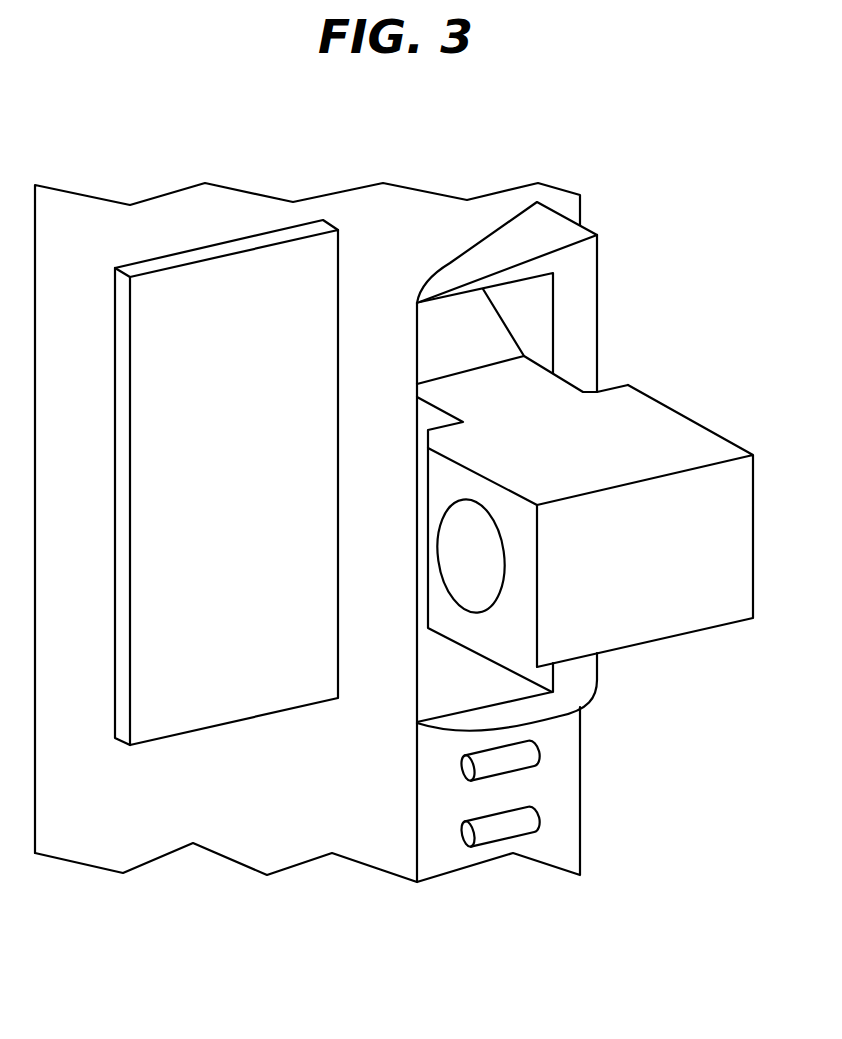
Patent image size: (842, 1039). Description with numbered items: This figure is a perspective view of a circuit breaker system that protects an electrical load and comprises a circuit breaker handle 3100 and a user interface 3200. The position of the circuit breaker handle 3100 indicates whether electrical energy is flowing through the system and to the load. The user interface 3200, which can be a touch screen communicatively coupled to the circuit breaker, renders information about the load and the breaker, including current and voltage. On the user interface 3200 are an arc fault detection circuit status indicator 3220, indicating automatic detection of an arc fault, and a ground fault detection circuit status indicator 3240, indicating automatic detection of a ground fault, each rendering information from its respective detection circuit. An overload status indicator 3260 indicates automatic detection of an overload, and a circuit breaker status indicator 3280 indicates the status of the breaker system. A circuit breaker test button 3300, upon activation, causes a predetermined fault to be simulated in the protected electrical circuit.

The circuit breaker handle 3100 is at (672, 432).
The user interface 3200 is at (323, 280).
The arc fault detection circuit status indicator 3220 is at (143, 317).
The ground fault detection circuit status indicator 3240 is at (230, 265).
The overload status indicator 3260 is at (313, 612).
The circuit breaker status indicator 3280 is at (148, 640).
The circuit breaker test button 3300 is at (230, 712).